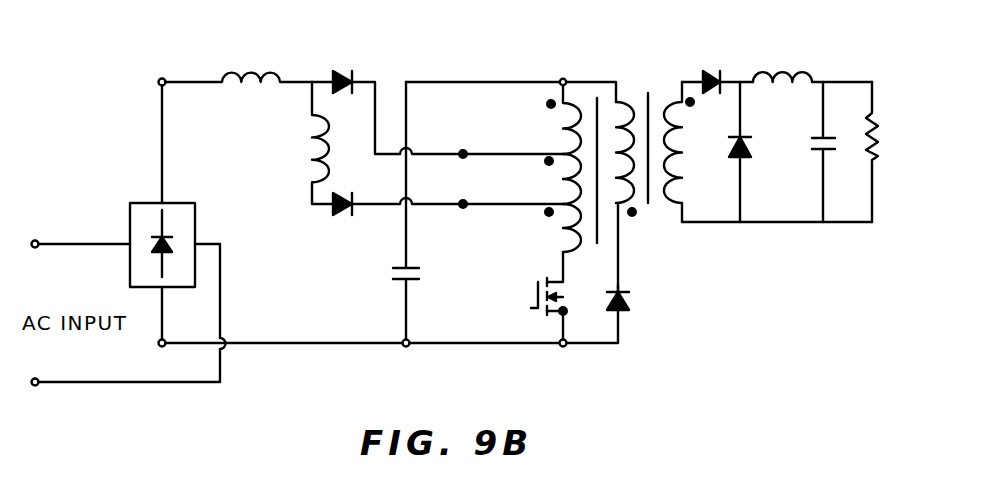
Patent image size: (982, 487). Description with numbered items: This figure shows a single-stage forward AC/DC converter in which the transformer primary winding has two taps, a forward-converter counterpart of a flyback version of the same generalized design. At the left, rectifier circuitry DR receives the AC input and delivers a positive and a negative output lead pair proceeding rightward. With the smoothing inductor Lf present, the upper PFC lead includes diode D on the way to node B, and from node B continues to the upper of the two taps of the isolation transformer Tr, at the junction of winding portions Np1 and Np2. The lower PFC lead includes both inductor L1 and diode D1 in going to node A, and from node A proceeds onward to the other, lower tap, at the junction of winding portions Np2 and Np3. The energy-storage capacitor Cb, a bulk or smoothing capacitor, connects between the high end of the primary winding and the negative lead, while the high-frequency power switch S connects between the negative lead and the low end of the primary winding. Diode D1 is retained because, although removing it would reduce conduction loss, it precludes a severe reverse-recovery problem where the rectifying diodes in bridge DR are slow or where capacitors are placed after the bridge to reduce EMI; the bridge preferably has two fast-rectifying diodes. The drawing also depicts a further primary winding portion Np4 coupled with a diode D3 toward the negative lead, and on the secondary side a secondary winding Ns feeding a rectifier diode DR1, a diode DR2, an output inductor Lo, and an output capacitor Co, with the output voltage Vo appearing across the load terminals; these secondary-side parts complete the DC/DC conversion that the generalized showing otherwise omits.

The smoothing inductor Lf is at (250, 61).
The inductor L1 is at (297, 143).
The diode D is at (332, 75).
The diode D1 is at (336, 212).
The diode D3 is at (627, 313).
The rectifier circuitry DR is at (161, 230).
The energy-storage capacitor Cb is at (399, 281).
The high-frequency power switch S is at (540, 312).
The node A is at (463, 207).
The node B is at (463, 150).
The isolation transformer Tr is at (625, 148).
The primary winding portion Np1 is at (547, 120).
The primary winding portion Np2 is at (547, 179).
The primary winding portion Np3 is at (547, 243).
The primary winding 4 Np4 is at (637, 152).
The secondary winding Ns is at (768, 152).
The rectifier diode DR1 is at (700, 78).
The freewheeling diode DR2 is at (750, 150).
The output inductor Lo is at (812, 59).
The output capacitor Co is at (835, 152).
The output voltage / load Vo is at (885, 152).